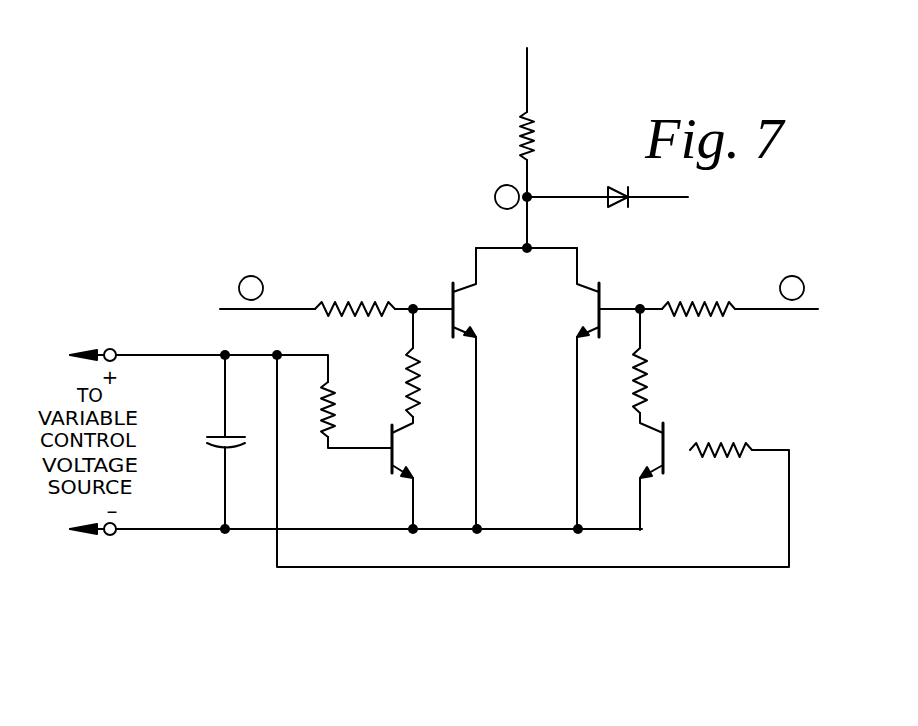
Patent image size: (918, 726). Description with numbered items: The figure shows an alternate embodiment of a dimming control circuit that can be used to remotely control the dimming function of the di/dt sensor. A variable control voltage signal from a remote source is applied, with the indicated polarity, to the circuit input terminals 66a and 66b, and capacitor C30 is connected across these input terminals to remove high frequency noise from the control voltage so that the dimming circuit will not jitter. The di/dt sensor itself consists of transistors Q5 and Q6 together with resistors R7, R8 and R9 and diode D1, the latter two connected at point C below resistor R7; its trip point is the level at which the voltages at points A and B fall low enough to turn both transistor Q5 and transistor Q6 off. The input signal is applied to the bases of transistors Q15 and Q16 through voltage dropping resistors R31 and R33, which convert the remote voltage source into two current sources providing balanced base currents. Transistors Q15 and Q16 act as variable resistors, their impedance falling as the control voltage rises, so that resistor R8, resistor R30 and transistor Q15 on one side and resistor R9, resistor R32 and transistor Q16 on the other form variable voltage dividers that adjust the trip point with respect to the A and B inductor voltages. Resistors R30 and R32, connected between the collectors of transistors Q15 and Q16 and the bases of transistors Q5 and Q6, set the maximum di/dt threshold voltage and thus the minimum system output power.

The resistor R7 is at (540, 136).
The diode D1 is at (607, 187).
The point C is at (507, 197).
The point A is at (251, 288).
The point B is at (792, 288).
The resistor R8 is at (355, 298).
The resistor R9 is at (698, 298).
The transistor Q5 is at (471, 389).
The transistor Q6 is at (576, 389).
The resistor R30 is at (391, 382).
The voltage dropping resistor R31 is at (310, 409).
The resistor R32 is at (660, 380).
The voltage dropping resistor R33 is at (721, 441).
The transistor Q15 is at (416, 473).
The transistor Q16 is at (636, 471).
The capacitor C30 is at (203, 445).
The circuit input terminal 66a is at (114, 351).
The circuit input terminal 66b is at (114, 533).